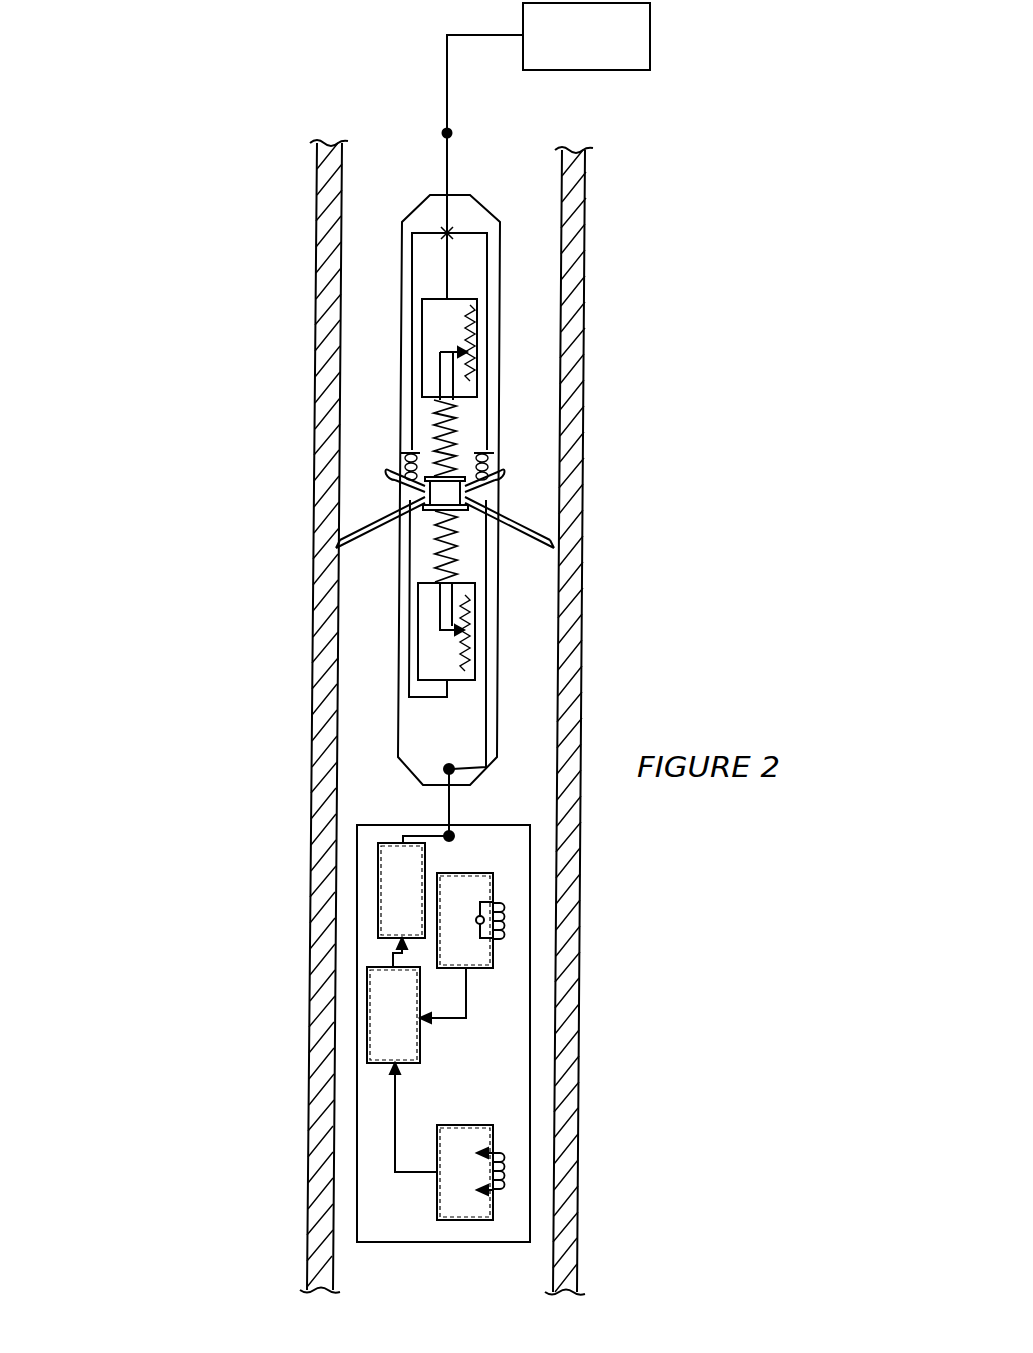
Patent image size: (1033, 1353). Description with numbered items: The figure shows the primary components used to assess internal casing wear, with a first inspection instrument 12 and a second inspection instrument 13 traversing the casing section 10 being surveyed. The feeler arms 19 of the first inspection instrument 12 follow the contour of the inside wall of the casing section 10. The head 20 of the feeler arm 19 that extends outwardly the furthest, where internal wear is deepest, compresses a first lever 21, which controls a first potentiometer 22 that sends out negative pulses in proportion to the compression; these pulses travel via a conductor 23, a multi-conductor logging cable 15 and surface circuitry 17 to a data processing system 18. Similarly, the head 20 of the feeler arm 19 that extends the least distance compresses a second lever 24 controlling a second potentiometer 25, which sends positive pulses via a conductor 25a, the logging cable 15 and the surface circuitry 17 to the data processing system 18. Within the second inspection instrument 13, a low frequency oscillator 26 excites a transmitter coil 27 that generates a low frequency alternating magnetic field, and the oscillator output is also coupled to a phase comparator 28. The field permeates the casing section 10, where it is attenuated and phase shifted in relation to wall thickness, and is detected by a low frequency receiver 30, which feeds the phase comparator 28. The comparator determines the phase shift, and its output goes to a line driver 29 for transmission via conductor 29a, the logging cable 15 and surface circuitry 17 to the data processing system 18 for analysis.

The casing section 10 is at (317, 418).
The first inspection instrument 12 is at (400, 366).
The second inspection instrument 13 is at (357, 1120).
The multi-conductor logging cable 15 is at (442, 160).
The surface circuitry 17 is at (447, 52).
The data processing system 18 is at (650, 32).
The feeler arms 19 is at (348, 522).
The head 20 is at (425, 490).
The first lever 21 is at (460, 550).
The first potentiometer 22 is at (475, 638).
The conductor 23 is at (409, 620).
The second lever 24 is at (463, 418).
The second potentiometer 25 is at (421, 328).
The conductor 25a is at (446, 262).
The low frequency oscillator 26 is at (493, 955).
The transmitter coil 27 is at (518, 912).
The phase comparator 28 is at (367, 1018).
The line driver 29 is at (378, 890).
The conductor 29a is at (424, 834).
The low frequency receiver 30 is at (475, 1204).